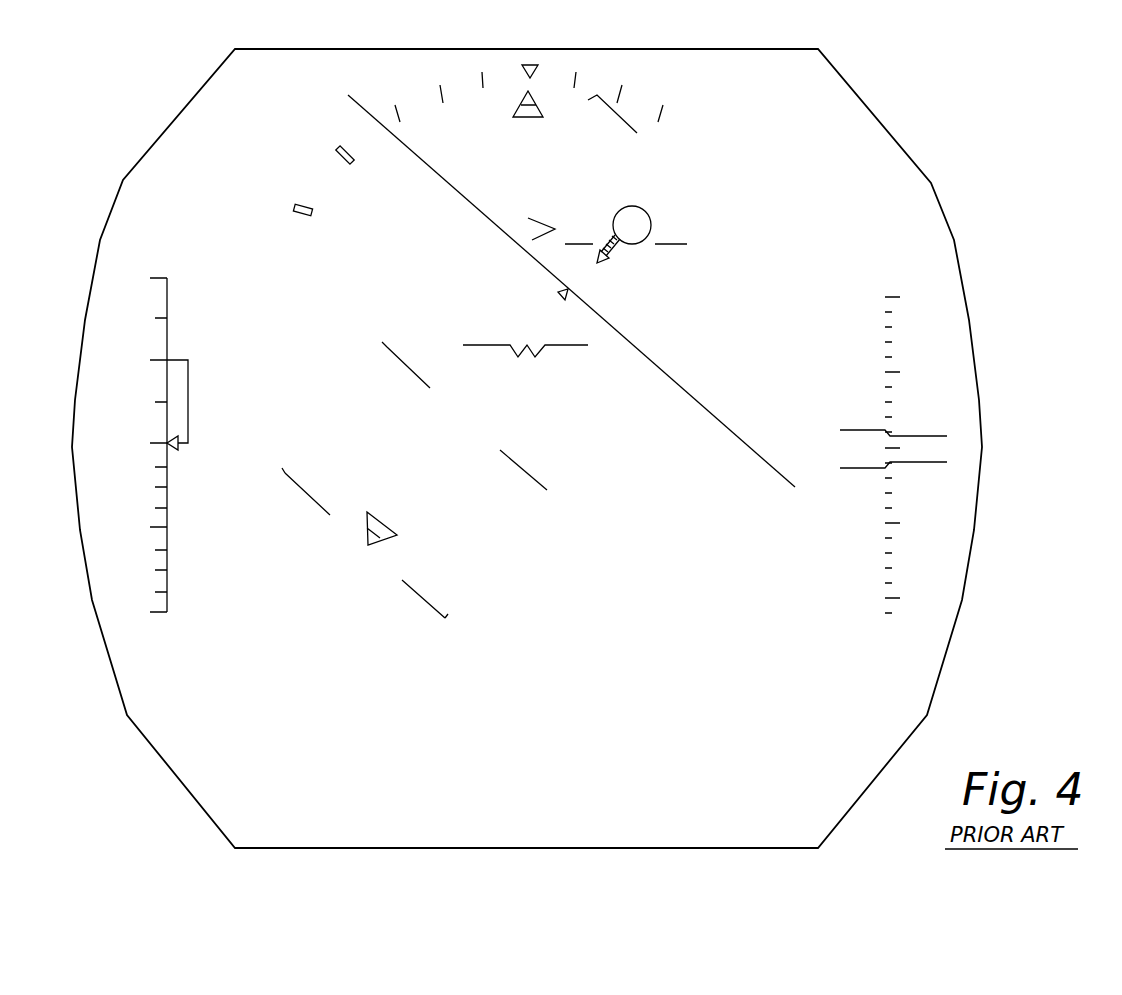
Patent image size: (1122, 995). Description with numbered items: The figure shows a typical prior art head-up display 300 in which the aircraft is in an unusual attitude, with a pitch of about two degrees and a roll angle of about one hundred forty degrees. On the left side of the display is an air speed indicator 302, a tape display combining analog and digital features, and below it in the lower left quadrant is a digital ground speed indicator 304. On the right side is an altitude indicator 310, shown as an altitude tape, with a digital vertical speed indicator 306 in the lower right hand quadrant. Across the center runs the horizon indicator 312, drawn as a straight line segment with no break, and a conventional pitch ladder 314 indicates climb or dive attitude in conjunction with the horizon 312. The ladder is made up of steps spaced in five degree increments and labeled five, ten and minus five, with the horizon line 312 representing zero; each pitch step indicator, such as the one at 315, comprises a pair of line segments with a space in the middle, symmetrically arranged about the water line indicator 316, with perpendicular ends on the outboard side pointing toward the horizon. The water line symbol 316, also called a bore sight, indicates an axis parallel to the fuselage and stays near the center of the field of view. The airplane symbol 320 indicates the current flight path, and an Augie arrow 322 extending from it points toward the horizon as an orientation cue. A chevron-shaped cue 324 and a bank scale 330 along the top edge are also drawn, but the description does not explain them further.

The display 300 is at (300, 48).
The air speed indicator 302 is at (195, 302).
The digital ground speed indicator 304 is at (285, 655).
The digital vertical speed indicator 306 is at (760, 757).
The altitude indicator 310 is at (852, 523).
The horizon indicator 312 is at (717, 413).
The pitch ladder 314 is at (320, 500).
The pitch step indicator 315 is at (548, 488).
The water line indicator 316 is at (510, 345).
The airplane symbol 320 is at (645, 207).
The Augie arrow 322 is at (617, 250).
The guidance cue 324 is at (525, 217).
The bank scale 330 is at (458, 63).